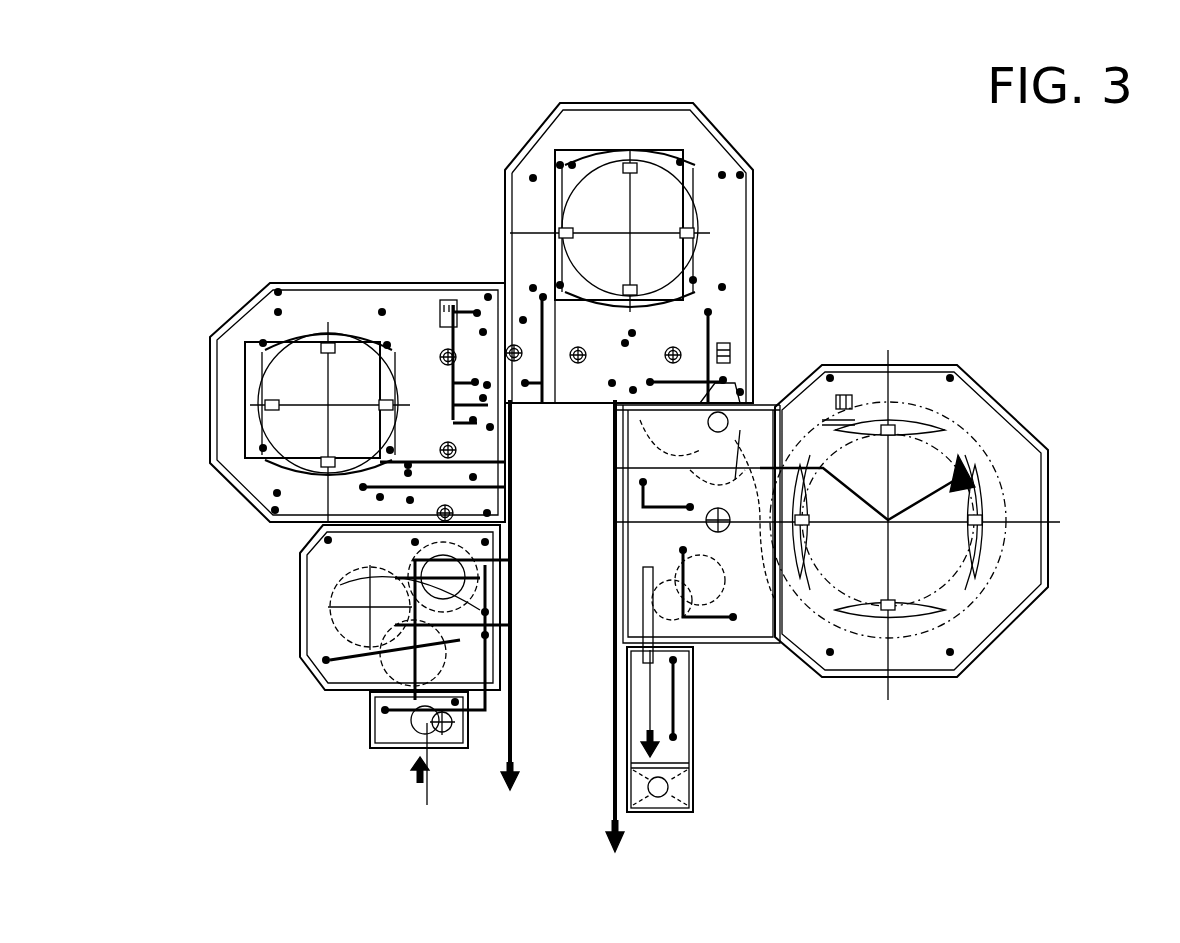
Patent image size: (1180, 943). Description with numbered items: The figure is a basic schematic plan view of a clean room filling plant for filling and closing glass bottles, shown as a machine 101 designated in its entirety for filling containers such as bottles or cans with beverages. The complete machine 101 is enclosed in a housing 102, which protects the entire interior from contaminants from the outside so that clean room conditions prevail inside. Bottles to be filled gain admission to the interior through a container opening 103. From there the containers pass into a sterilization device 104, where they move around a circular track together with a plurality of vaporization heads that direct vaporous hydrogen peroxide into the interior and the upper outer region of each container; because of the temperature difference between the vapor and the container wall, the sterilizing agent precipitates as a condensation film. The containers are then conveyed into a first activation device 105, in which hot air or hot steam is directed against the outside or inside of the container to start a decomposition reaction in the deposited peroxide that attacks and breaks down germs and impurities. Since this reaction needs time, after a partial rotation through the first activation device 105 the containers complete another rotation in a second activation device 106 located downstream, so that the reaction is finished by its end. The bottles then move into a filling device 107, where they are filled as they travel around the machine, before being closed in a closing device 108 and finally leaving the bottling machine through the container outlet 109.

The machine 101 is at (747, 93).
The housing 102 is at (350, 283).
The container opening 103 is at (452, 748).
The sterilization device 104 is at (312, 595).
The first activation device 105 is at (237, 418).
The second activation device 106 is at (728, 212).
The filling device 107 is at (922, 378).
The closing device 108 is at (757, 638).
The container outlet 109 is at (683, 790).